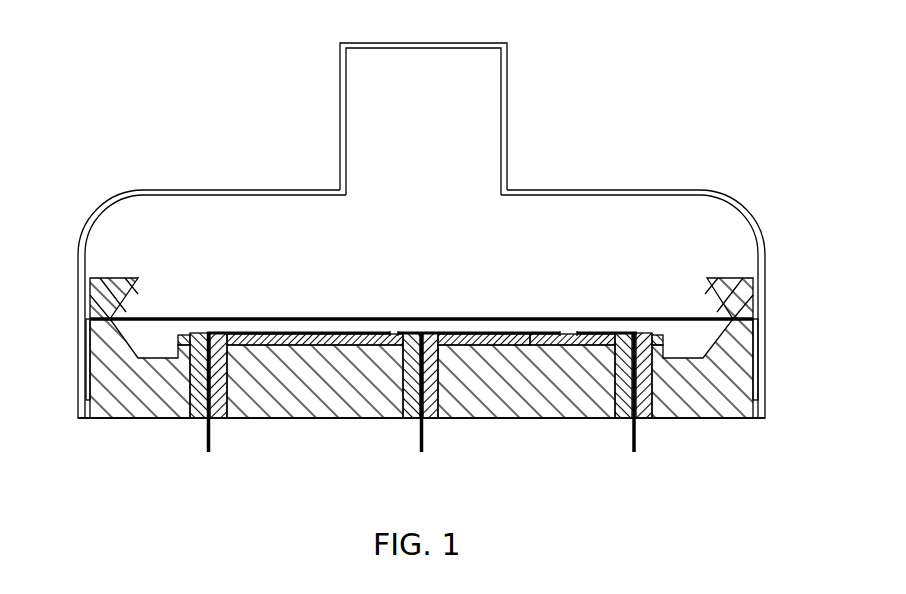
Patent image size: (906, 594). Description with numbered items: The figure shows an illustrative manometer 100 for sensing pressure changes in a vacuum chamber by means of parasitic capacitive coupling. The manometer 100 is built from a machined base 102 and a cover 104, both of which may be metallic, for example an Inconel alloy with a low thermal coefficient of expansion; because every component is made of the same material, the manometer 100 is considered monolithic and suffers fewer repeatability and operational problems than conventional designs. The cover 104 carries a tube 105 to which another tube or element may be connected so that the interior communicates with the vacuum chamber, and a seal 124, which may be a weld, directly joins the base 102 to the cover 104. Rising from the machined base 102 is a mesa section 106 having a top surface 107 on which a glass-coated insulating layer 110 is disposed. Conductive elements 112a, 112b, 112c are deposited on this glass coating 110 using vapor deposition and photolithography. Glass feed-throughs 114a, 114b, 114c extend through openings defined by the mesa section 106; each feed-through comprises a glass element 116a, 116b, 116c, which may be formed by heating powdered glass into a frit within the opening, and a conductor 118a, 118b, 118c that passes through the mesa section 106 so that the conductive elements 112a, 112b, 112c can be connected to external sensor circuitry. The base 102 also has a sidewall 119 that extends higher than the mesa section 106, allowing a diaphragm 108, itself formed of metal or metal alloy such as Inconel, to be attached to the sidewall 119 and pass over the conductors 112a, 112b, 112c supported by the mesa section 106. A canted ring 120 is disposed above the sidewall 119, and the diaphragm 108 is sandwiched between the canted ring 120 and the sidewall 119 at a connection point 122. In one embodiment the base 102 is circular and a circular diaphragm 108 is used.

The manometer 100 is at (438, 230).
The machined base 102 is at (327, 420).
The cover 104 is at (218, 190).
The tube 105 is at (340, 98).
The mesa section 106 is at (570, 252).
The top surface 107 is at (387, 331).
The diaphragm 108 is at (303, 331).
The glass-coated insulating layer 110 is at (183, 332).
The conductive element 112a is at (250, 332).
The conductive element 112b is at (470, 332).
The conductive element 112c is at (598, 332).
The glass feed-through 114a is at (195, 435).
The glass feed-through 114b is at (409, 436).
The glass feed-through 114c is at (622, 436).
The glass element 116a is at (222, 419).
The glass element 116b is at (433, 419).
The glass element 116c is at (647, 419).
The conductor 118a is at (207, 456).
The conductor 118b is at (421, 456).
The conductor 118c is at (634, 456).
The sidewall 119 is at (82, 335).
The canted ring 120 is at (738, 277).
The connection point 122 is at (130, 307).
The seal 124 is at (84, 419).